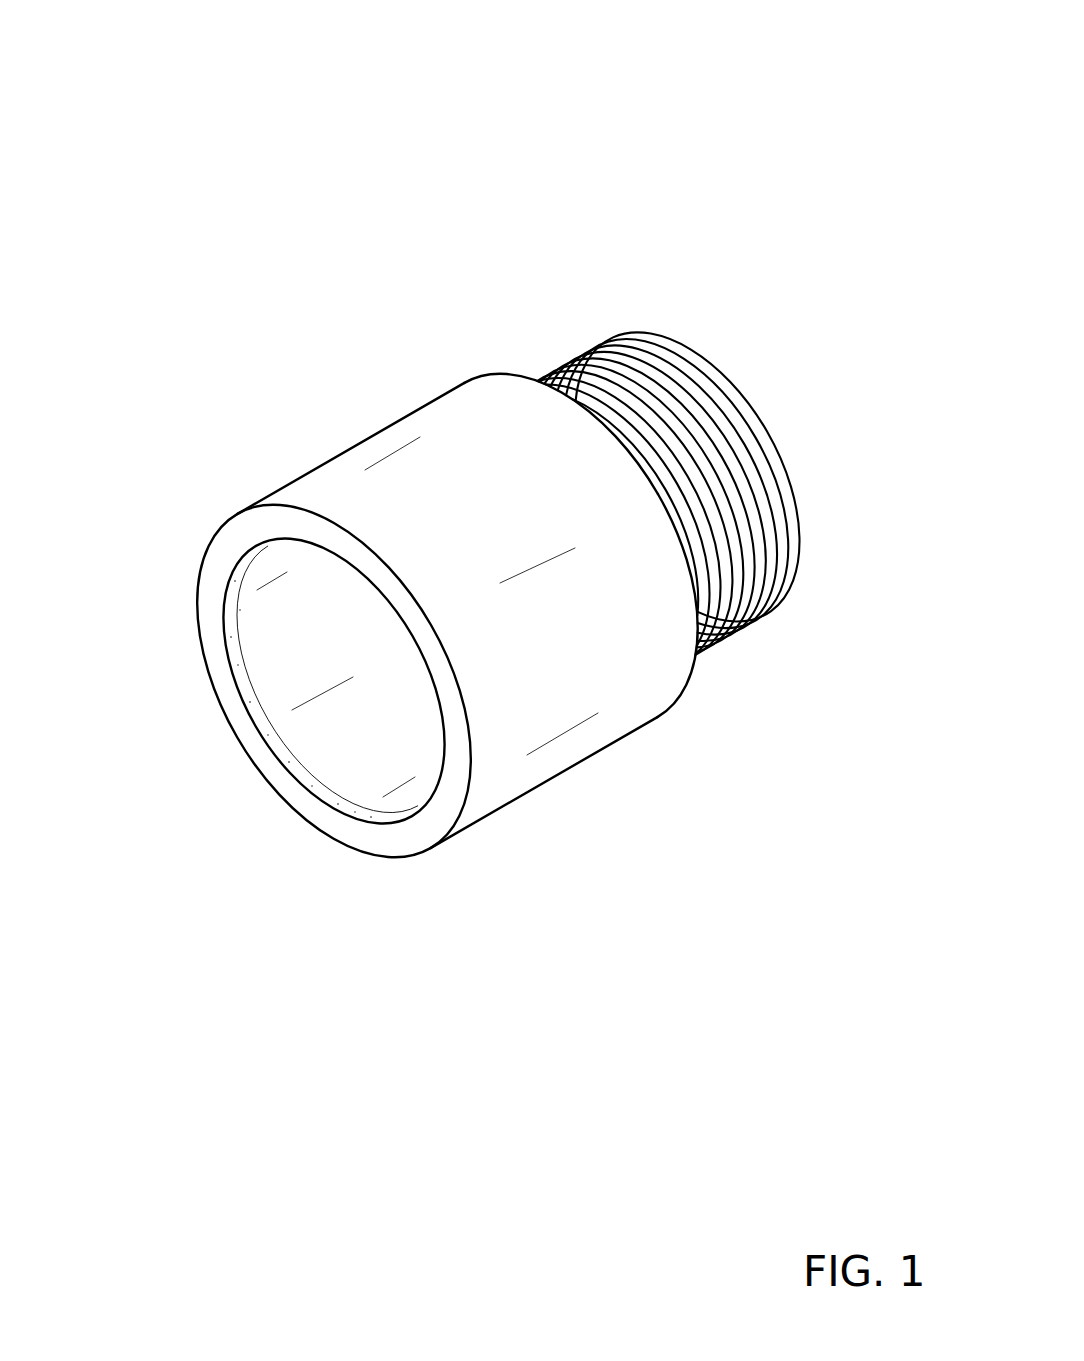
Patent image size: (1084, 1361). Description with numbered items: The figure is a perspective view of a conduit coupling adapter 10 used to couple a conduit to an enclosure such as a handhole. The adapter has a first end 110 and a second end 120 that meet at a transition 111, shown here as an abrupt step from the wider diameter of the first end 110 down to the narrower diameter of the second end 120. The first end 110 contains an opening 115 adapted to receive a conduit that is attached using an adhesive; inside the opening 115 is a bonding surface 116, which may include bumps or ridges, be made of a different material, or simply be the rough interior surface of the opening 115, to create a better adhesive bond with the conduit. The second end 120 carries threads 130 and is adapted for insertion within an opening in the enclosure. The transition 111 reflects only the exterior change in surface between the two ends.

The conduit coupling adapter 10 is at (215, 210).
The first end 110 is at (305, 470).
The transition 111 is at (497, 378).
The opening 115 is at (338, 760).
The bonding surface 116 is at (270, 718).
The second end 120 is at (690, 675).
The threads 130 is at (722, 400).